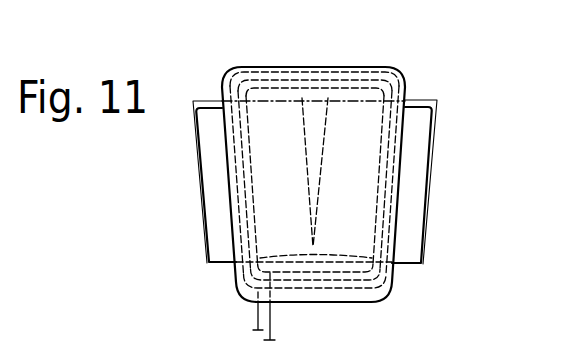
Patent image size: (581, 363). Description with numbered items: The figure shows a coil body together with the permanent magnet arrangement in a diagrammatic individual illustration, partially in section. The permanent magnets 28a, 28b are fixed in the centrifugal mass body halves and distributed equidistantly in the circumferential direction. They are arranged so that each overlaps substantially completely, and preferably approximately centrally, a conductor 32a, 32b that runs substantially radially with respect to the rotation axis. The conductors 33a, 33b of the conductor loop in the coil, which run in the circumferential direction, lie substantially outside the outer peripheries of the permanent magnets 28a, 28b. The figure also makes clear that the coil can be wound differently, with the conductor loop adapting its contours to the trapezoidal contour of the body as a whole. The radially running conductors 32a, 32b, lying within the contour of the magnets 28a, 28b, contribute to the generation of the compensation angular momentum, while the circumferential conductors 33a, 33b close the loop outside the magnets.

The permanent magnet 28a is at (420, 127).
The permanent magnet 28b is at (208, 137).
The conductor 32a is at (392, 190).
The conductor 32b is at (247, 192).
The conductor 33a is at (330, 277).
The conductor 33b is at (308, 84).